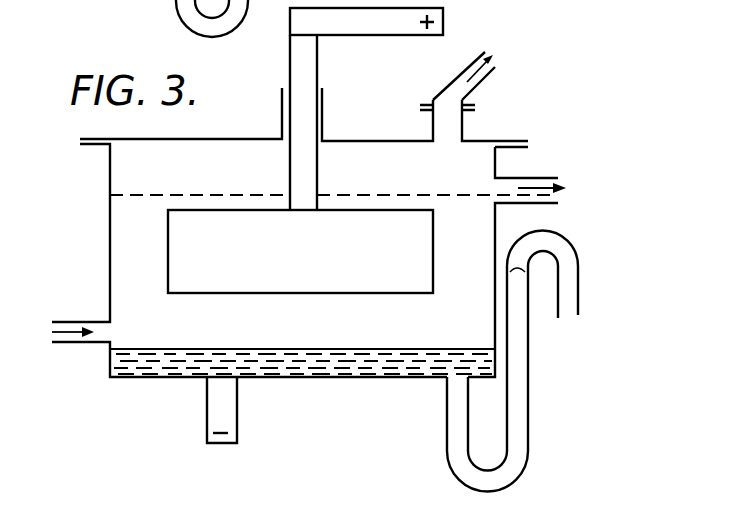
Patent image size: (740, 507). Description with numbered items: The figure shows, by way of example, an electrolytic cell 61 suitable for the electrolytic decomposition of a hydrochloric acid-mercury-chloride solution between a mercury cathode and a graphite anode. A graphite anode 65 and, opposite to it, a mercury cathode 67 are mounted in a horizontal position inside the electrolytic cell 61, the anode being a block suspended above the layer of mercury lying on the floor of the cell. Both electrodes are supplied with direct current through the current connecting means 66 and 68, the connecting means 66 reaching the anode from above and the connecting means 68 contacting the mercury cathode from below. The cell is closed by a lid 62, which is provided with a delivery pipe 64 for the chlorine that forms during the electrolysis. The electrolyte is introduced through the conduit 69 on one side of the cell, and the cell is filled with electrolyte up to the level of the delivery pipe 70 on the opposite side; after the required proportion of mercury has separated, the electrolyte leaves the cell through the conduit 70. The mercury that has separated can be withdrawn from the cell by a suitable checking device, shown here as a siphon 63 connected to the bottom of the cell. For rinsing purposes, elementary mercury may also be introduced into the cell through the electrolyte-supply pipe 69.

The electrolytic cell 61 is at (111, 228).
The lid 62 is at (248, 139).
The siphon 63 is at (447, 430).
The delivery pipe 64 is at (494, 69).
The graphite anode 65 is at (300, 251).
The current connecting means 66 is at (366, 109).
The mercury cathode 67 is at (342, 378).
The current connecting means 68 is at (237, 425).
The conduit 69 is at (54, 331).
The delivery pipe 70 is at (558, 190).